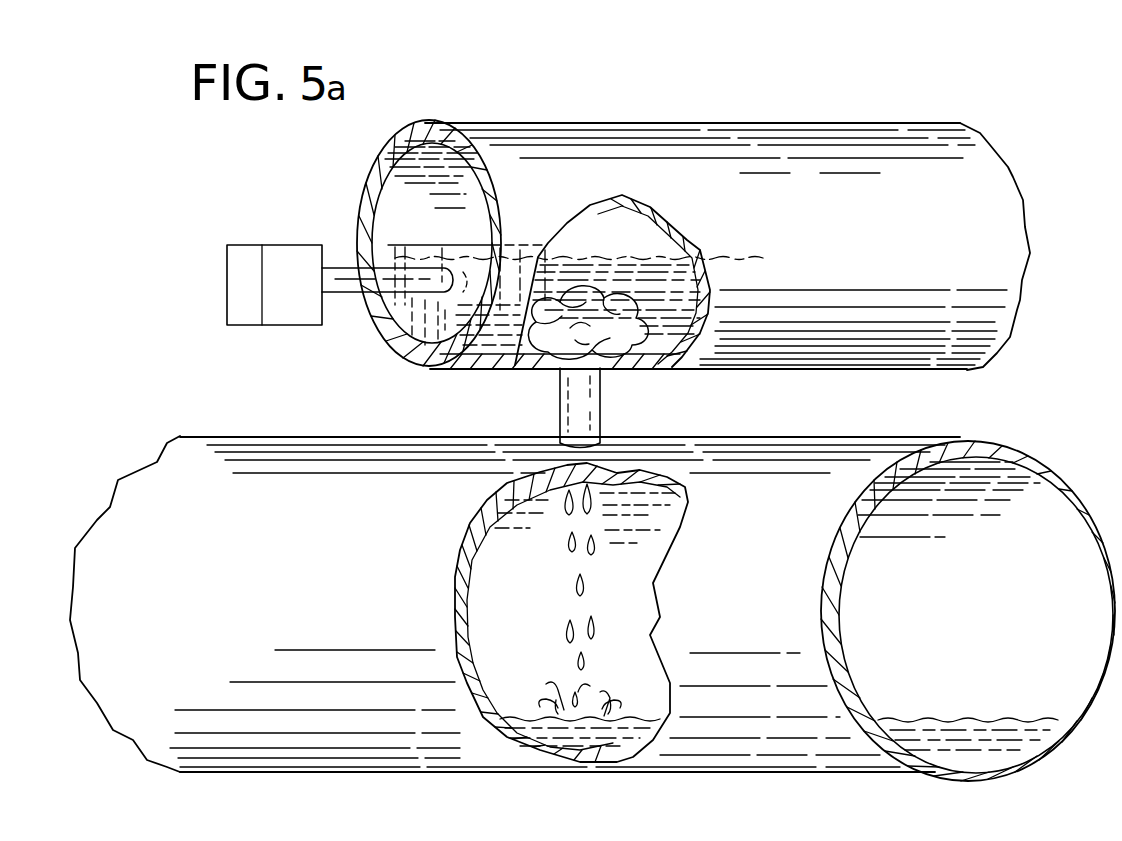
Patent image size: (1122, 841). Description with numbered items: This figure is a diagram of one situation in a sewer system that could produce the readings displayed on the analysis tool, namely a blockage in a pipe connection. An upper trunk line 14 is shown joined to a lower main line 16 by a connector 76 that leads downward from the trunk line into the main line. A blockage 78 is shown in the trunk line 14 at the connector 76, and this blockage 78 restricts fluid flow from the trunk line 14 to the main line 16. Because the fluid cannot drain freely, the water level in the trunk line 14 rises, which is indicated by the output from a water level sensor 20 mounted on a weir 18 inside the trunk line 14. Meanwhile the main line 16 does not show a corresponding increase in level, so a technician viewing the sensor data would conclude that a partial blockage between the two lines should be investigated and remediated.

The trunk line 14 is at (877, 220).
The main line 16 is at (377, 555).
The weir 18 is at (420, 246).
The water level sensor 20 is at (304, 308).
The connector 76 is at (602, 410).
The blockage 78 is at (588, 290).